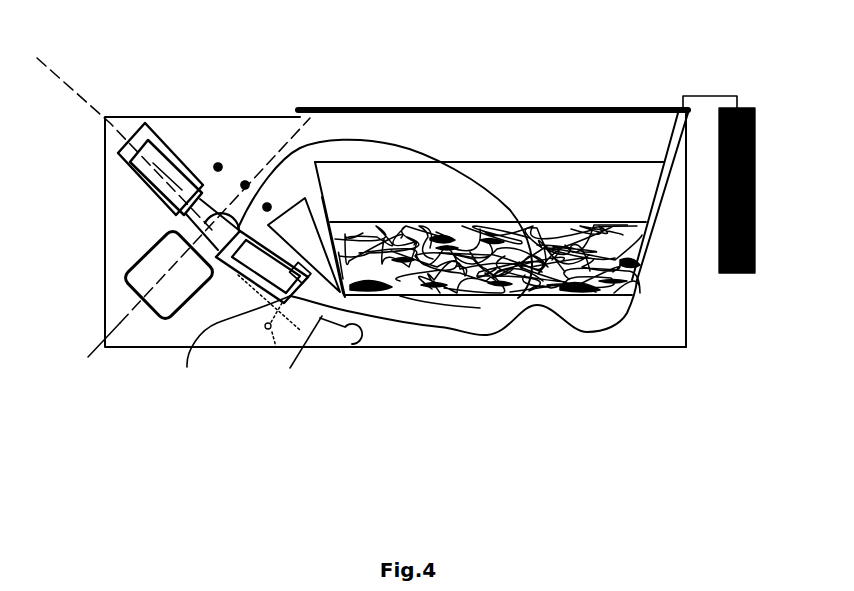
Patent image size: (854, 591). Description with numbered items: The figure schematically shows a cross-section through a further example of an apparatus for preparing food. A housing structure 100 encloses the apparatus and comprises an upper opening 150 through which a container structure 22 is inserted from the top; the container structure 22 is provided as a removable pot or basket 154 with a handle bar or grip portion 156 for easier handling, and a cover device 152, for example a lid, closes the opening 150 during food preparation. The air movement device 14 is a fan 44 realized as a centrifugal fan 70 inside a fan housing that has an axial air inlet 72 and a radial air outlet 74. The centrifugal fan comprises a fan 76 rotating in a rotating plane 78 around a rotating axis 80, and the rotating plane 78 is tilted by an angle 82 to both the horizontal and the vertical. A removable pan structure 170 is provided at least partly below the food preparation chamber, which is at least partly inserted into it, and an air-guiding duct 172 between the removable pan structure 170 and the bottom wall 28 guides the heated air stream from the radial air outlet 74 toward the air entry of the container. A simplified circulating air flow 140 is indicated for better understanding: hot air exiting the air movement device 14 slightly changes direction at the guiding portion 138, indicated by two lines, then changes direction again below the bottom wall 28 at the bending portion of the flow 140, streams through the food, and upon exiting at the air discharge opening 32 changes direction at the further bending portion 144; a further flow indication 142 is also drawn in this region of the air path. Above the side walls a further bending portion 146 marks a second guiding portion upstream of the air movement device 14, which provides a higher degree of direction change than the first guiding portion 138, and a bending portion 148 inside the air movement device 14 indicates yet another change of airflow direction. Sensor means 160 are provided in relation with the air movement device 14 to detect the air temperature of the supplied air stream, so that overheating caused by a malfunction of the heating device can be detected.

The air movement device 14 is at (210, 148).
The container structure 22 is at (322, 190).
The bottom wall 28 is at (459, 297).
The air discharge opening 32 is at (530, 193).
The fan 44 is at (98, 223).
The centrifugal fan 70 is at (175, 142).
The axial air inlet 72 is at (258, 185).
The radial air outlet 74 is at (316, 345).
The fan 76 is at (140, 179).
The rotating plane 78 is at (75, 93).
The rotating axis 80 is at (125, 327).
The angle 82 is at (265, 330).
The housing structure 100 is at (688, 305).
The guiding portion 138 is at (352, 344).
The circulating air flow 140 is at (387, 140).
The spray boundary 142 is at (503, 303).
The bending portion 144 is at (505, 190).
The bending portion 146 is at (342, 139).
The bending portion 148 is at (124, 280).
The upper opening 150 is at (638, 135).
The cover device 152 is at (490, 107).
The pot or basket 154 is at (712, 96).
The grip portion 156 is at (755, 163).
The sensor means 160 is at (187, 367).
The removable pan structure 170 is at (614, 333).
The air-guiding duct 172 is at (428, 316).